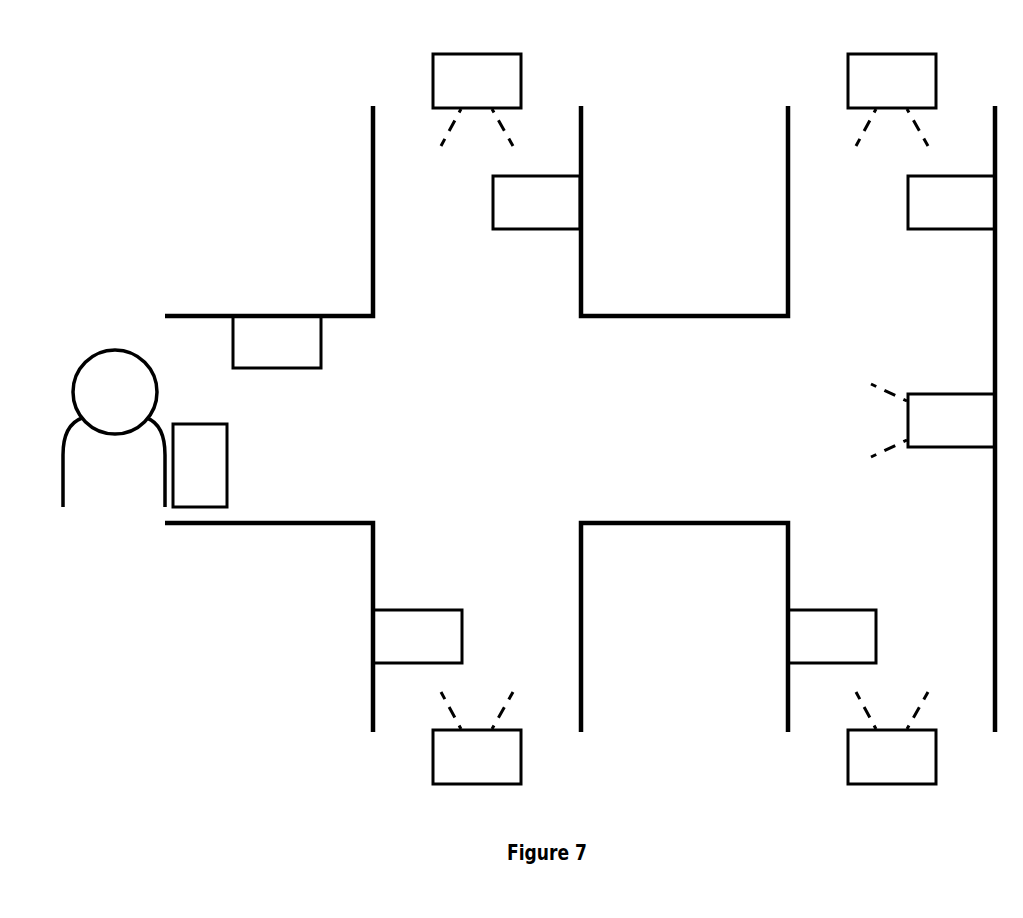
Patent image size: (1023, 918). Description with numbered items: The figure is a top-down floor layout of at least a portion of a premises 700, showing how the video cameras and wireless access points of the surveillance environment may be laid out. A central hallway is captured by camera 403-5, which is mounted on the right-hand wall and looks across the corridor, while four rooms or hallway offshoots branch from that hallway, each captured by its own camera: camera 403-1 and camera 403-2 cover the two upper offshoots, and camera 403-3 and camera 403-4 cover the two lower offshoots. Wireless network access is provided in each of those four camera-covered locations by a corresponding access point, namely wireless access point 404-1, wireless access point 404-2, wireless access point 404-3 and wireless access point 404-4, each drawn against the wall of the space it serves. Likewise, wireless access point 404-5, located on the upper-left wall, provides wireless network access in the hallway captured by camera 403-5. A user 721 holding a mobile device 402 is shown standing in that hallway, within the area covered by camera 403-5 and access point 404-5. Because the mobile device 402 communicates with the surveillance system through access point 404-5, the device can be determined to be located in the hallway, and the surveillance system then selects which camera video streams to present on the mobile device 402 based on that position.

The premises 700 is at (64, 91).
The user 721 is at (70, 432).
The mobile device 402 is at (181, 486).
The video camera 403-1 is at (450, 104).
The video camera 403-2 is at (865, 104).
The video camera 403-3 is at (450, 778).
The video camera 403-4 is at (865, 778).
The video camera 403-5 is at (924, 444).
The wireless access point 404-1 is at (510, 224).
The wireless access point 404-2 is at (925, 224).
The wireless access point 404-3 is at (391, 658).
The wireless access point 404-4 is at (806, 658).
The wireless access point 404-5 is at (251, 364).